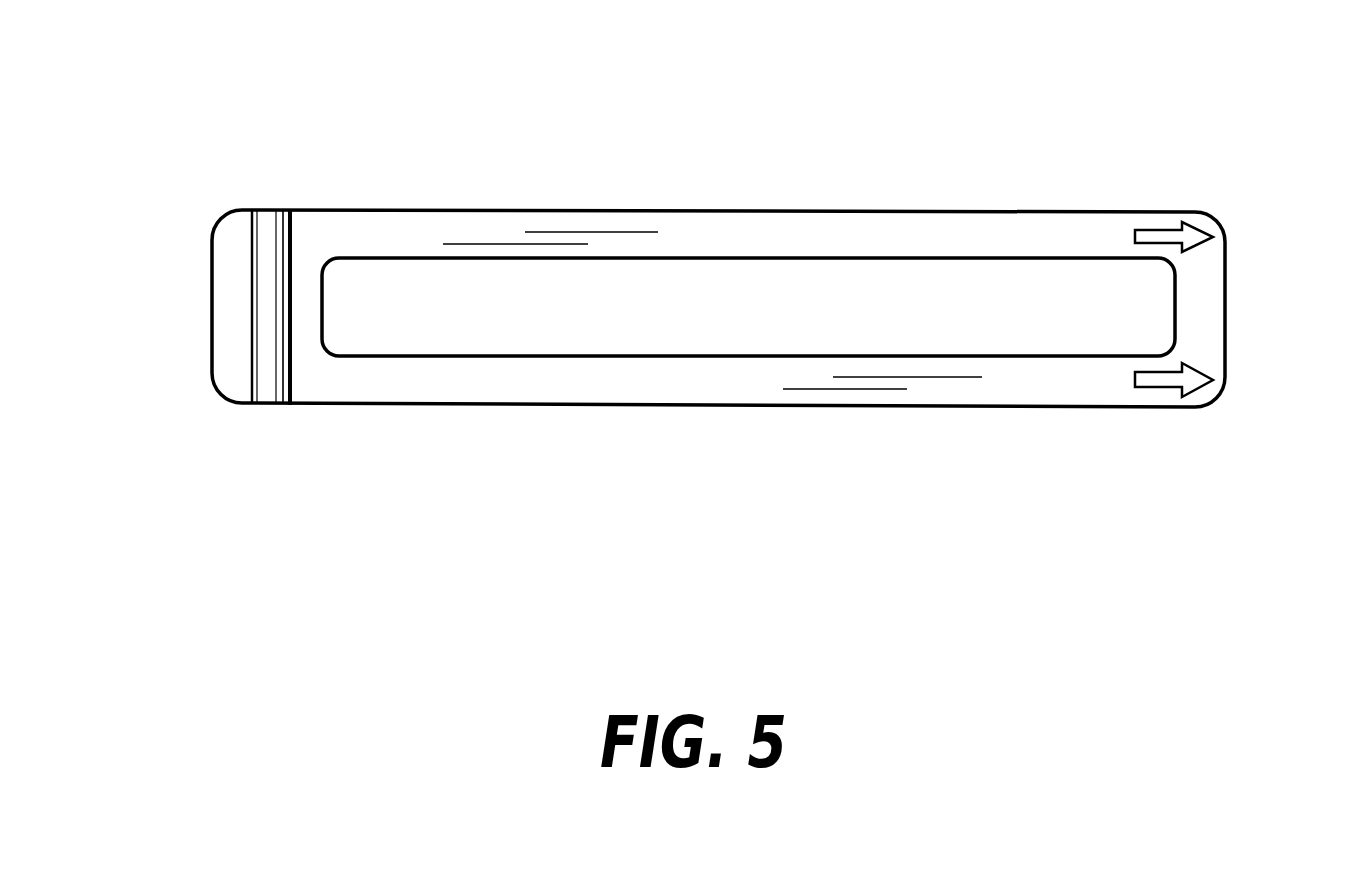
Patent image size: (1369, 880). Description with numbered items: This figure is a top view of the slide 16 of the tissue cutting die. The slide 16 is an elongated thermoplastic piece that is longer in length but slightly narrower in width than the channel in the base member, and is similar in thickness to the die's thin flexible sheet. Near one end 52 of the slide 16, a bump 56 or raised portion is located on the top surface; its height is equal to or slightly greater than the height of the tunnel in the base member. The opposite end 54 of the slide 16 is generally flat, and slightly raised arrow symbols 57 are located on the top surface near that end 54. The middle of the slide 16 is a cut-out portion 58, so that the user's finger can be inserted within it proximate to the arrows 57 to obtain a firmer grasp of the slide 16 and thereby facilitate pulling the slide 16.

The slide 16 is at (765, 212).
The end 52 is at (224, 298).
The opposite end 54 is at (1205, 297).
The bump 56 is at (265, 247).
The arrow symbols 57 is at (1162, 237).
The cut-out portion 58 is at (633, 312).